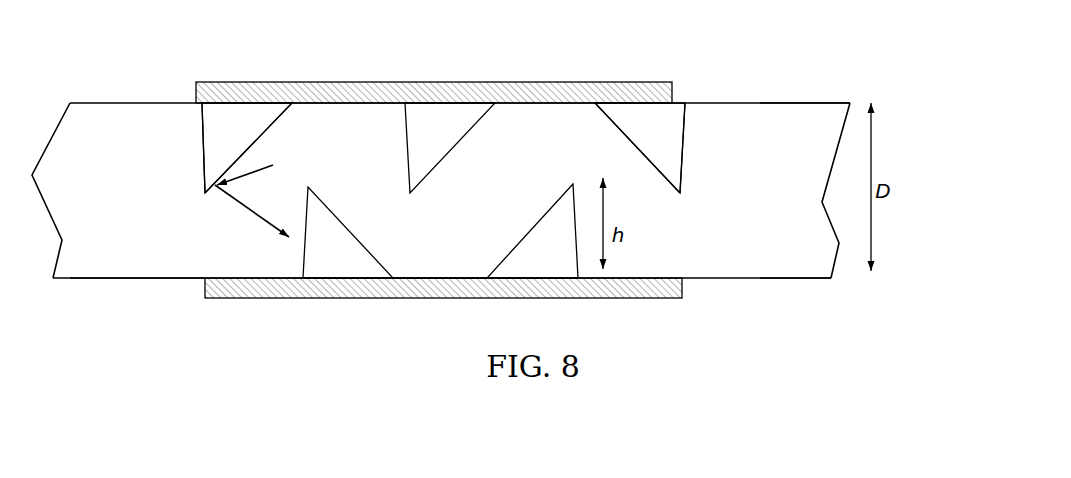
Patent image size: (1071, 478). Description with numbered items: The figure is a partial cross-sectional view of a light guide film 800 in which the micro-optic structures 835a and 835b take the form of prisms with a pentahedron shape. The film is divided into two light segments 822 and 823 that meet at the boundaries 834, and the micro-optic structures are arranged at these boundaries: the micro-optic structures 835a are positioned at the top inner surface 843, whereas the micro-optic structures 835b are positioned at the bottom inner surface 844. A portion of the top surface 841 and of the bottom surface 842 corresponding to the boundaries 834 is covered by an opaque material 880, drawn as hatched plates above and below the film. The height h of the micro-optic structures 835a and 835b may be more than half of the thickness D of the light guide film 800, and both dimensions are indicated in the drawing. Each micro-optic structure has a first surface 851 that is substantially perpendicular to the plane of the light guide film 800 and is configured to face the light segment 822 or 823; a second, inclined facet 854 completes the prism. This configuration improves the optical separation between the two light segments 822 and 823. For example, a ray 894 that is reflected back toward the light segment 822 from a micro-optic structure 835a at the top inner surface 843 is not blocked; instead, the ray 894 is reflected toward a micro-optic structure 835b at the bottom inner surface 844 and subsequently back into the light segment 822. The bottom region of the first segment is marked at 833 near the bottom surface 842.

The light guide film 800 is at (441, 178).
The light segment 822 is at (85, 206).
The light segment 823 is at (709, 216).
The lower surface of first portion 833 is at (182, 267).
The boundaries 834 is at (416, 248).
The micro-optic structures 835a is at (207, 142).
The micro-optic structures 835b is at (310, 272).
The top surface 841 is at (765, 97).
The bottom surface 842 is at (805, 281).
The top inner surface 843 is at (814, 109).
The bottom inner surface 844 is at (767, 266).
The first surface 851 is at (196, 122).
The inclined facet of notch 854 is at (276, 127).
The opaque material 880 is at (505, 95).
The ray 894 is at (263, 195).